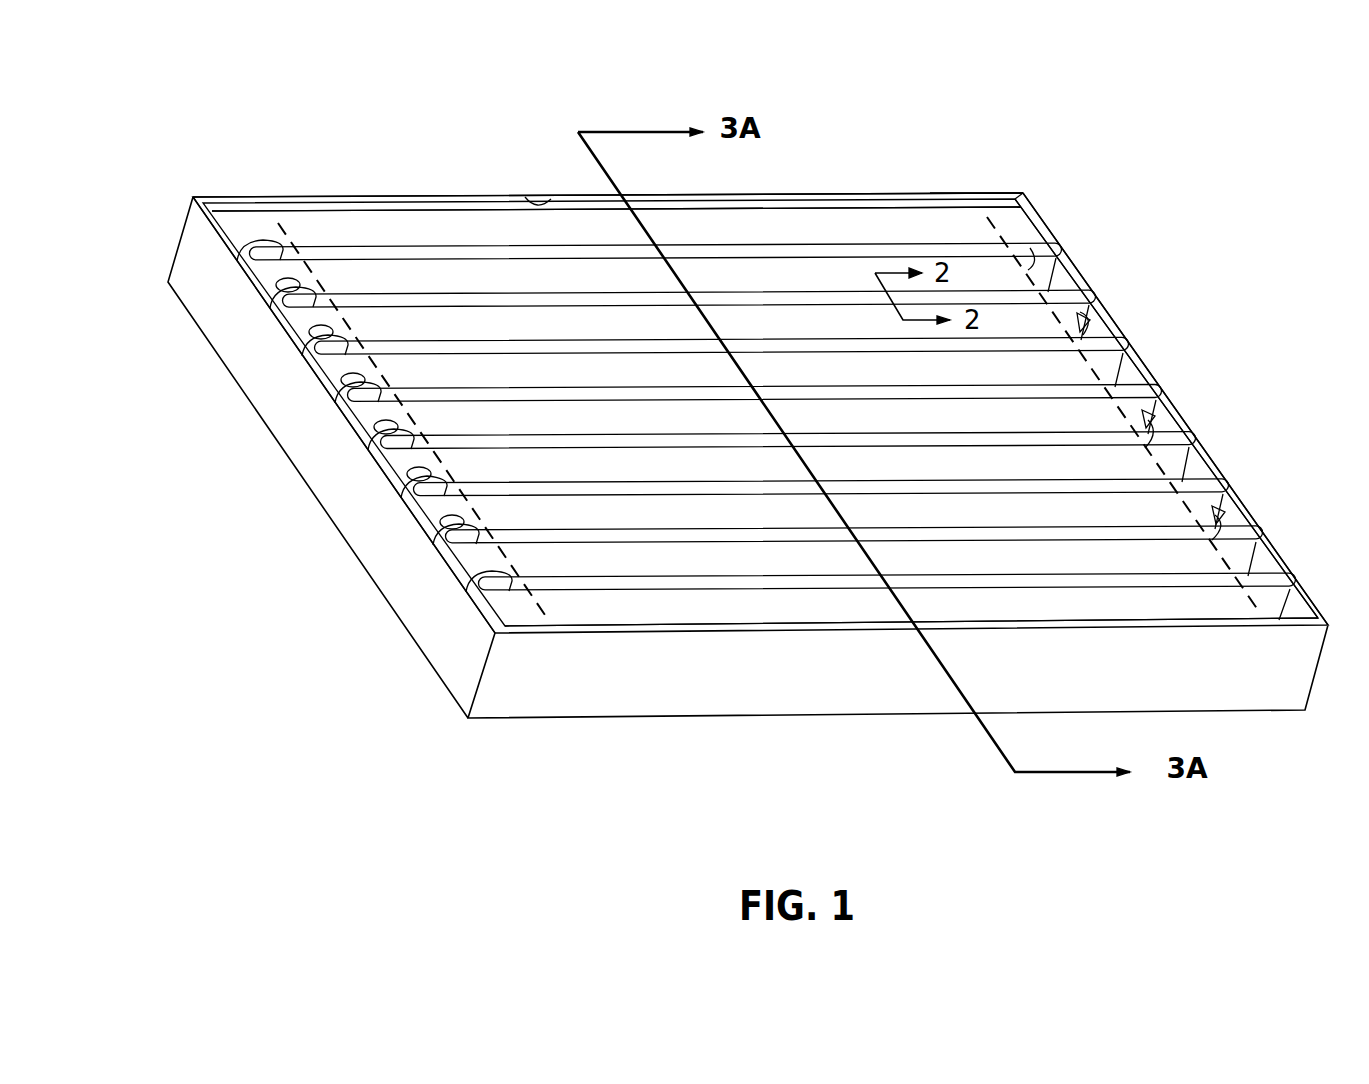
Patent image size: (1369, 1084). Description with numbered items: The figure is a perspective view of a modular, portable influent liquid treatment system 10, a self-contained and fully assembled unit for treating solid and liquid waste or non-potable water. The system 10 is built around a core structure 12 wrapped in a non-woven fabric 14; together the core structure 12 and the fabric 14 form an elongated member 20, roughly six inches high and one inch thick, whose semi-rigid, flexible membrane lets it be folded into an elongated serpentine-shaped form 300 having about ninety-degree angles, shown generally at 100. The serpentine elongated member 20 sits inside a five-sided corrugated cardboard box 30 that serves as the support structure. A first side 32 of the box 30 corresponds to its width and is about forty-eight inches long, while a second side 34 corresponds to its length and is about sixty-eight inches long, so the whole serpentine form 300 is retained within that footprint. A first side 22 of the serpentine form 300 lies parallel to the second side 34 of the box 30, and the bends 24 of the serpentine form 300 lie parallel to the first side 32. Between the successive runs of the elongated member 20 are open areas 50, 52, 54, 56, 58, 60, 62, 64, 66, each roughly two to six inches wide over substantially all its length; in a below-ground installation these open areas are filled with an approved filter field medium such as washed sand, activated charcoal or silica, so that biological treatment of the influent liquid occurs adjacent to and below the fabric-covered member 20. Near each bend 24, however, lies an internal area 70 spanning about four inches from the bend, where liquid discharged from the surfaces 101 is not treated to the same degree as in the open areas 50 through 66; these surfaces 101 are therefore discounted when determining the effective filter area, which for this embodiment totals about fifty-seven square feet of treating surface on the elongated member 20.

The influent liquid treatment system 10 is at (240, 618).
The core structure 12 is at (1010, 200).
The fabric 14 is at (932, 226).
The elongated member 20 is at (812, 243).
The first side of serpentine form 22 is at (560, 195).
The bends 24 is at (1022, 231).
The box 30 is at (265, 197).
The first side of the box 32 is at (1077, 257).
The second side of the box 34 is at (335, 195).
The open area 50 is at (344, 242).
The open area 52 is at (376, 289).
The open area 54 is at (416, 336).
The open area 56 is at (443, 385).
The open area 58 is at (478, 432).
The open area 60 is at (512, 479).
The open area 62 is at (542, 526).
The open area 64 is at (573, 573).
The open area 66 is at (605, 621).
The internal area 70 is at (306, 296).
The ninety-degree angles 100 is at (1018, 200).
The surfaces 101 is at (1032, 212).
The serpentine-shaped form 300 is at (407, 224).